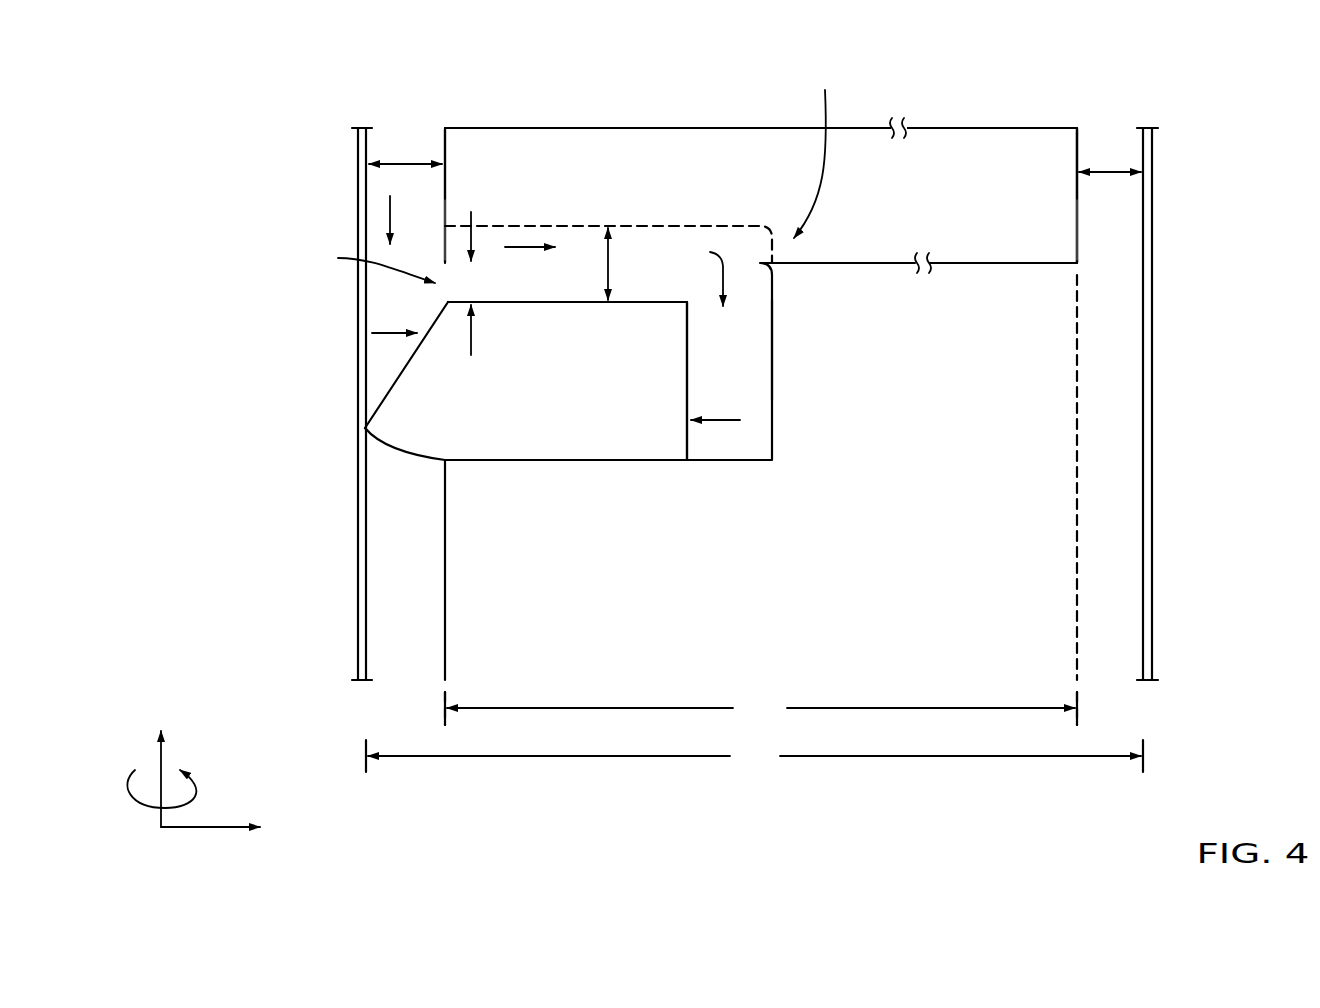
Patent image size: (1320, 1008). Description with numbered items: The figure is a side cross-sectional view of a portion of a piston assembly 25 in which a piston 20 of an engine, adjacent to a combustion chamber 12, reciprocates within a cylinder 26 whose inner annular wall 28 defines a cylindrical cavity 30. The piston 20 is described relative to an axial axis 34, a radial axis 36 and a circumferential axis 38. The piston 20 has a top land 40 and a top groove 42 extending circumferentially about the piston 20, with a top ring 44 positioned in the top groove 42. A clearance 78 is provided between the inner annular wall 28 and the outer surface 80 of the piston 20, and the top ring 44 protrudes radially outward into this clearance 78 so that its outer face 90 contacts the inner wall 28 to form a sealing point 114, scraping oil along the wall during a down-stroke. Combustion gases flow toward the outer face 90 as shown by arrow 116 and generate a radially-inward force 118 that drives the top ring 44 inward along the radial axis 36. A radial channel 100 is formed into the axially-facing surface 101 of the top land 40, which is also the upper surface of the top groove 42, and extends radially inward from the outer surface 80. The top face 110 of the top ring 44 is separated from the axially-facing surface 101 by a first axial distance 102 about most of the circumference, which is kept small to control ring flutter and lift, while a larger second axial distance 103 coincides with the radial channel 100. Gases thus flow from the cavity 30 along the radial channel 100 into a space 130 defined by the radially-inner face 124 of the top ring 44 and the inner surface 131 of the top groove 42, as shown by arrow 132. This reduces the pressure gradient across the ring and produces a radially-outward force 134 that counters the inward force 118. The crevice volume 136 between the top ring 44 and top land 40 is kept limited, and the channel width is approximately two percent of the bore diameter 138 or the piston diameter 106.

The combustion chamber 12 is at (667, 104).
The piston 20 is at (930, 104).
The piston assembly 25 is at (216, 96).
The cylinder 26 is at (358, 172).
The inner annular wall 28 is at (367, 143).
The cylindrical cavity 30 is at (766, 230).
The axial axis 34 is at (161, 760).
The radial axis 36 is at (205, 827).
The circumferential axis 38 is at (193, 797).
The top land 40 is at (547, 128).
The top groove 42 is at (365, 264).
The top ring 44 is at (430, 423).
The clearance 78 is at (395, 167).
The outer surface 80 is at (444, 140).
The outer face 90 is at (397, 373).
The radial channel 100 is at (737, 223).
The axially-facing surface 101 is at (512, 263).
The first axial distance 102 is at (471, 355).
The second axial distance 103 is at (610, 273).
The piston diameter 106 is at (761, 500).
The top face 110 is at (537, 302).
The sealing point 114 is at (365, 428).
The arrow 116 is at (390, 213).
The radially-inward force 118 is at (372, 333).
The radially-inner face 124 is at (688, 442).
The space 130 is at (729, 367).
The inner surface 131 is at (770, 342).
The arrow 132 is at (528, 247).
The radially-outward force 134 is at (712, 420).
The crevice volume 136 is at (821, 148).
The bore diameter 138 is at (754, 756).